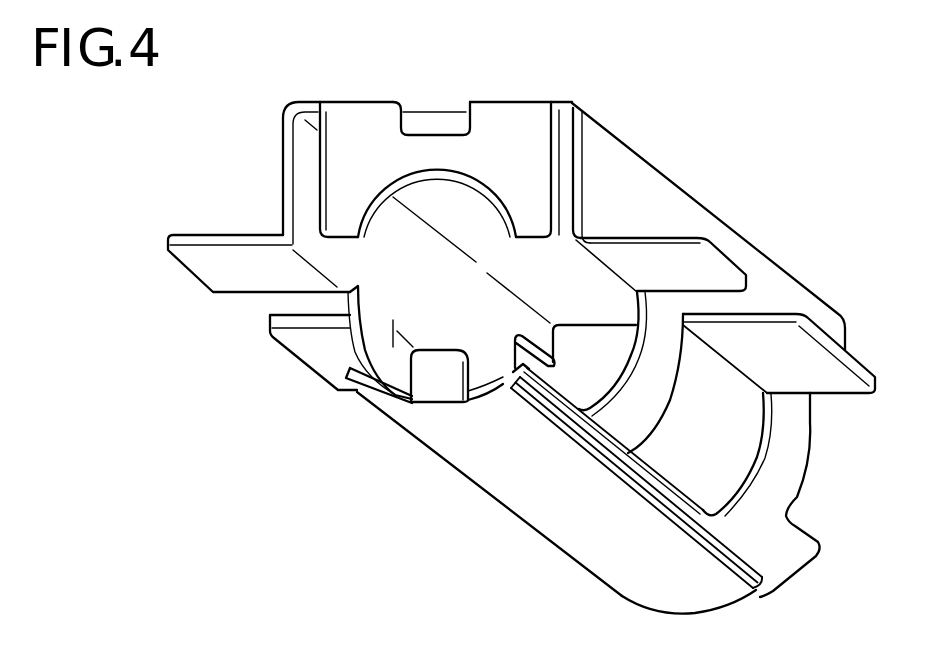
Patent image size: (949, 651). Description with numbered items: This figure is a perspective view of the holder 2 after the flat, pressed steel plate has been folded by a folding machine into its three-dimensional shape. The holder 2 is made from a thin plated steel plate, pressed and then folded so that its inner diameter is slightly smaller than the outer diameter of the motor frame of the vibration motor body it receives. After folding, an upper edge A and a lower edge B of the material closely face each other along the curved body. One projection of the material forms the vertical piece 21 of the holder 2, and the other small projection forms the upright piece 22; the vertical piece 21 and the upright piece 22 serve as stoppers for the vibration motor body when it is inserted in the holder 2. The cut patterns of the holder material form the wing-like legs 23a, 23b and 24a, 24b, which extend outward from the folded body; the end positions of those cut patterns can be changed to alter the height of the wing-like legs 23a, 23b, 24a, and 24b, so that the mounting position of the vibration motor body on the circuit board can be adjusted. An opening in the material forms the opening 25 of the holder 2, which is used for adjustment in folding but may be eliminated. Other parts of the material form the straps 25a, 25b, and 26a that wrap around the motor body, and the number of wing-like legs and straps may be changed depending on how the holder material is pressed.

The holder 2 is at (678, 160).
The vertical piece 21 is at (356, 160).
The upright piece 22 is at (437, 380).
The wing-like leg 23a is at (228, 258).
The wing-like leg 23b is at (298, 341).
The wing-like leg 24a is at (703, 268).
The wing-like leg 24b is at (800, 350).
The opening 25 is at (431, 127).
The strap 25a is at (662, 358).
The strap 25b is at (793, 452).
The strap 26a is at (368, 350).
The upper edge A is at (663, 492).
The lower edge B is at (543, 493).